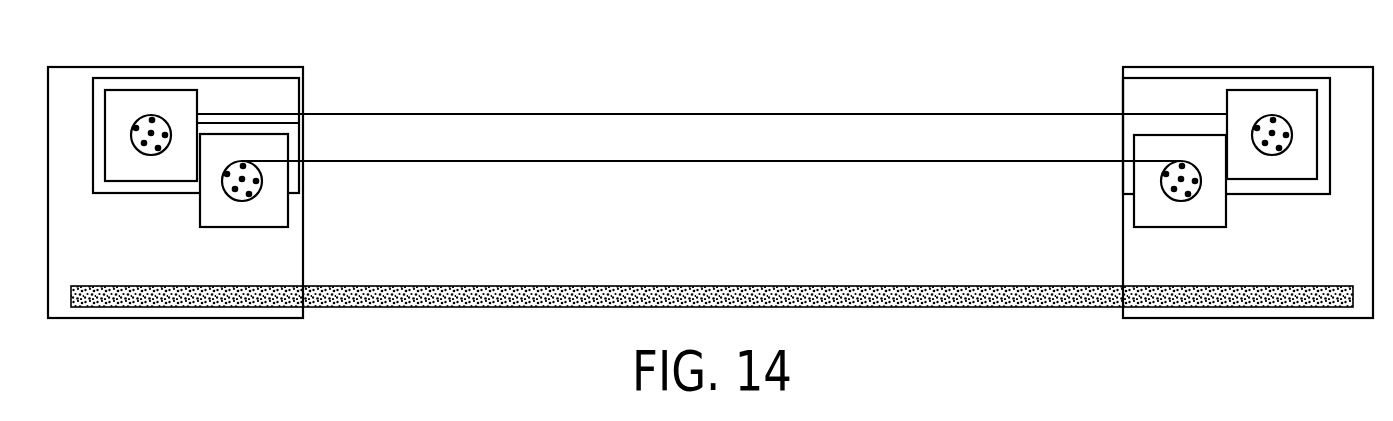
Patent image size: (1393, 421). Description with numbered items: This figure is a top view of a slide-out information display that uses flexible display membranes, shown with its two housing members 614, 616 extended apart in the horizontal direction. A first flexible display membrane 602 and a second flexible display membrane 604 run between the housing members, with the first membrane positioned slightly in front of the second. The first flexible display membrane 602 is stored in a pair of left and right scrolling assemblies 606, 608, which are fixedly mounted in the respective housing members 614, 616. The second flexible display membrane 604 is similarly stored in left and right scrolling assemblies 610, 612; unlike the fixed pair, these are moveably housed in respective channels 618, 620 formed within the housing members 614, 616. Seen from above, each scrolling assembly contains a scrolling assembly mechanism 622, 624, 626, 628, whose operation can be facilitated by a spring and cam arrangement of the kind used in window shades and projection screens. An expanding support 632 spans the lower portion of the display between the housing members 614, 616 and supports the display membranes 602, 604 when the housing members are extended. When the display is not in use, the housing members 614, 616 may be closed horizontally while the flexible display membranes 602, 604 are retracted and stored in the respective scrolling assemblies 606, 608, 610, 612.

The first flexible display membrane 602 is at (543, 160).
The second flexible display membrane 604 is at (780, 112).
The left scrolling assembly 606 is at (278, 217).
The right scrolling assembly 608 is at (1143, 217).
The left scrolling assembly 610 is at (151, 97).
The right scrolling assembly 612 is at (1272, 97).
The housing member 614 is at (278, 270).
The housing member 616 is at (1143, 272).
The channel 618 is at (277, 90).
The channel 620 is at (1146, 92).
The scrolling assembly mechanism 622 is at (242, 200).
The scrolling assembly mechanism 624 is at (1180, 200).
The scrolling assembly mechanism 626 is at (151, 153).
The scrolling assembly mechanism 628 is at (1272, 155).
The expanding support 632 is at (722, 286).